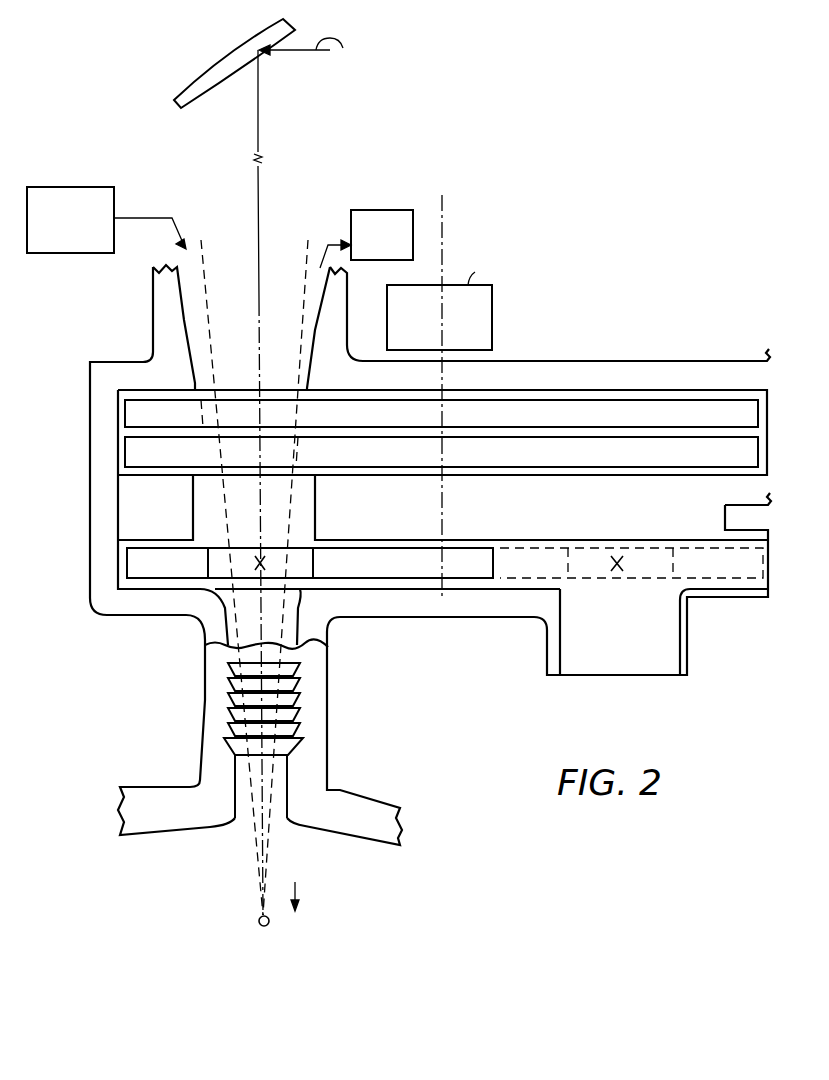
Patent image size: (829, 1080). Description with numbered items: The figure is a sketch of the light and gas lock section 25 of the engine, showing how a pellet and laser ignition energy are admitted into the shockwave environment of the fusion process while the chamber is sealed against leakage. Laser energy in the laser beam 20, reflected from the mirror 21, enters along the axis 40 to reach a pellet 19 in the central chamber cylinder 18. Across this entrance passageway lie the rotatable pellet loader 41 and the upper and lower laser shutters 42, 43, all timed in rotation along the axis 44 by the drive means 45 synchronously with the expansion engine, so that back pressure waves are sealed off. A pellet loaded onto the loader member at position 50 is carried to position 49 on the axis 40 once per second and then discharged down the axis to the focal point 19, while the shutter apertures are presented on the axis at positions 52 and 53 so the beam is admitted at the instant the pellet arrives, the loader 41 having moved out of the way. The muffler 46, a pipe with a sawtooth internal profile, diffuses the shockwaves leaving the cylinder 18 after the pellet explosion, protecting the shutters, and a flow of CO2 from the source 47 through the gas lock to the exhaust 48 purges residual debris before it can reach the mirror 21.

The central chamber cylinder 18 is at (297, 892).
The pellet 19 is at (258, 919).
The laser beam 20 is at (205, 276).
The mirror 21 is at (189, 90).
The light and gas lock section 25 is at (110, 324).
The axis 40 is at (262, 253).
The rotatable pellet loader 41 is at (388, 570).
The laser shutter 42 is at (441, 413).
The laser shutter 43 is at (441, 452).
The axis of rotation 44 is at (442, 212).
The drive means 45 is at (472, 330).
The muffler 46 is at (298, 710).
The CO2 source 47 is at (86, 187).
The exhaust 48 is at (395, 210).
The pellet position on axis 49 is at (260, 579).
The pellet loading position 50 is at (617, 581).
The aperture position of upper shutter 52 is at (253, 405).
The aperture position of lower shutter 53 is at (260, 455).